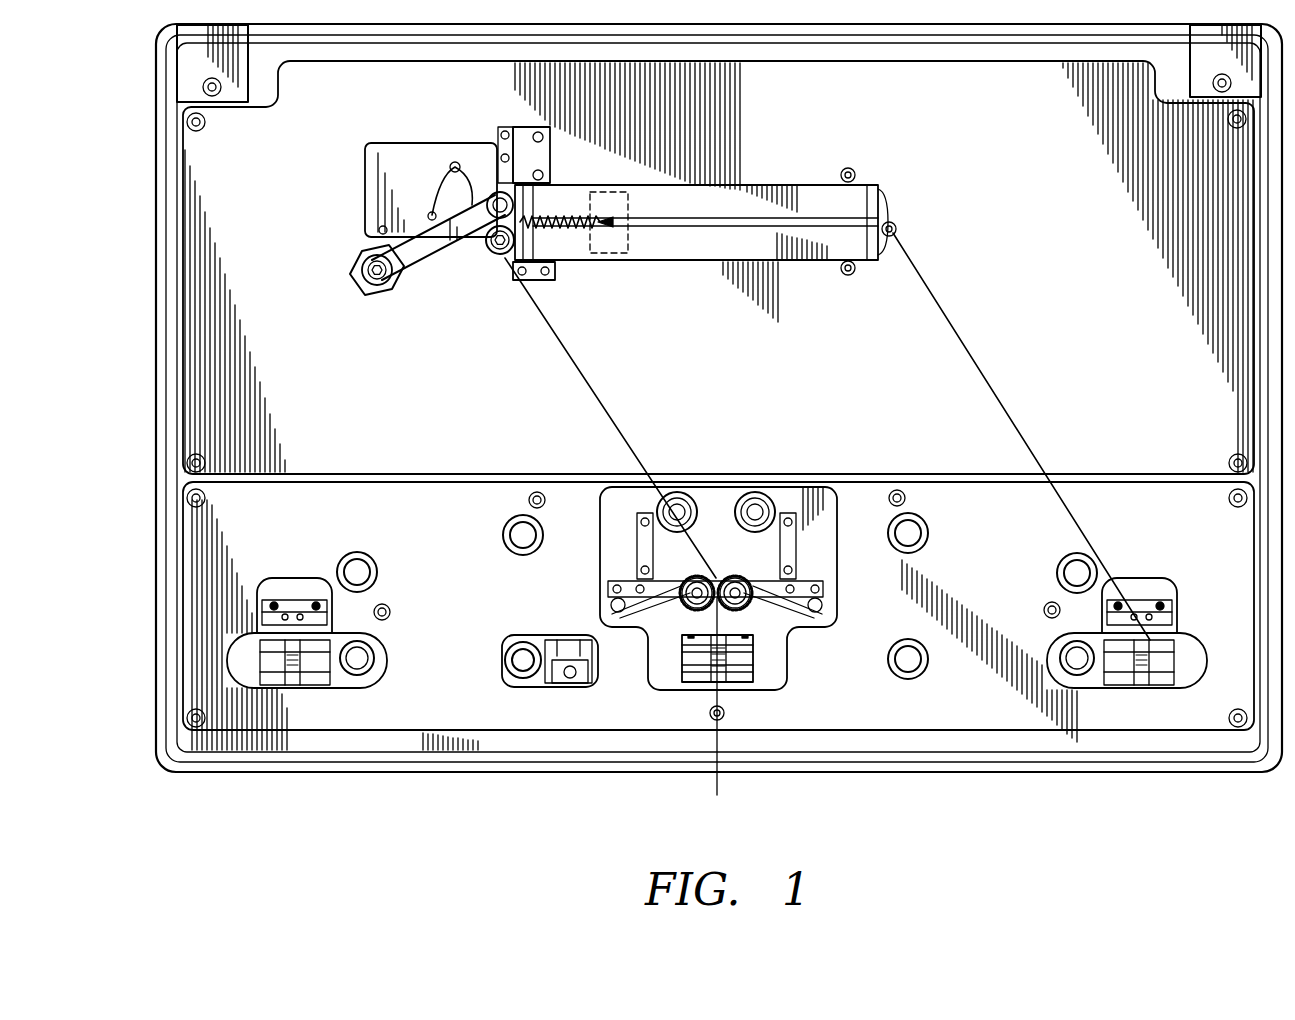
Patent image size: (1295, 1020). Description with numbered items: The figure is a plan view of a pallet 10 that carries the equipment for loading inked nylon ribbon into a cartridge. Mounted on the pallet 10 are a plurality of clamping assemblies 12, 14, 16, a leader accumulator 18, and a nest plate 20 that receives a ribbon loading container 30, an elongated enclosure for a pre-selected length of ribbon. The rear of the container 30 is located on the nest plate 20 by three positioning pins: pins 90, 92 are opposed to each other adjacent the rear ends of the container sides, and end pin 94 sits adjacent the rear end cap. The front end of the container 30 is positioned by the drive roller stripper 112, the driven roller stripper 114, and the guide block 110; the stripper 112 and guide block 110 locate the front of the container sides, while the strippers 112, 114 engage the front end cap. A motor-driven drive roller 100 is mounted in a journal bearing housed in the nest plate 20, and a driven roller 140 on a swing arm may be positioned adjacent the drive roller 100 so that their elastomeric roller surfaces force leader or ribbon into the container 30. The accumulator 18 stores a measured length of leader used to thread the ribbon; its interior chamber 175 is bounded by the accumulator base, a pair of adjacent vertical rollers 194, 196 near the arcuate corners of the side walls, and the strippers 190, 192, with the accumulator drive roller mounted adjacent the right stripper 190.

The pallet 10 is at (150, 362).
The clamping assembly 12 is at (313, 661).
The clamping assembly 14 is at (747, 667).
The clamping assembly 16 is at (1172, 650).
The leader accumulator 18 is at (726, 591).
The nest plate 20 is at (212, 186).
The ribbon loading container 30 is at (777, 180).
The positioning pin 90 is at (849, 276).
The positioning pin 92 is at (851, 168).
The end pin 94 is at (893, 224).
The drive roller 100 is at (482, 250).
The guide block 110 is at (536, 150).
The drive roller stripper 112 is at (539, 281).
The driven roller stripper 114 is at (497, 148).
The driven roller 140 is at (497, 192).
The accumulator chamber 175 is at (724, 566).
The right stripper 190 is at (672, 603).
The stripper 192 is at (763, 597).
The roller 194 is at (663, 497).
The roller 196 is at (753, 497).